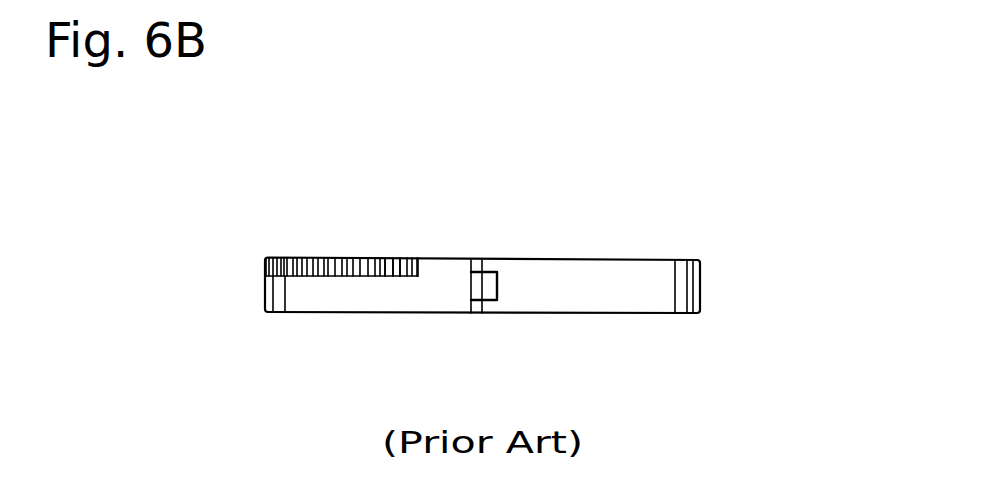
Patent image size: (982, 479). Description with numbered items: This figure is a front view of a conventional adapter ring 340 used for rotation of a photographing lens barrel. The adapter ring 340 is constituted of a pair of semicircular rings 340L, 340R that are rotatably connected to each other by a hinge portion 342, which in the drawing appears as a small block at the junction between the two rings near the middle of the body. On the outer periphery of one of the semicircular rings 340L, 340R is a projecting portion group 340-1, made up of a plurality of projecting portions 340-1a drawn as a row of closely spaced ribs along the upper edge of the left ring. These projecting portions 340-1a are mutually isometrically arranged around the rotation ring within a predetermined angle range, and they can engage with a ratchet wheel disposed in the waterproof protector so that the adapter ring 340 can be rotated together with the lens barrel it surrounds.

The adapter ring 340 is at (658, 231).
The semicircular ring 340L is at (340, 298).
The semicircular ring 340R is at (630, 298).
The projecting portion group 340-1 is at (323, 248).
The projecting portion 340-1a is at (393, 264).
The hinge portion 342 is at (486, 282).